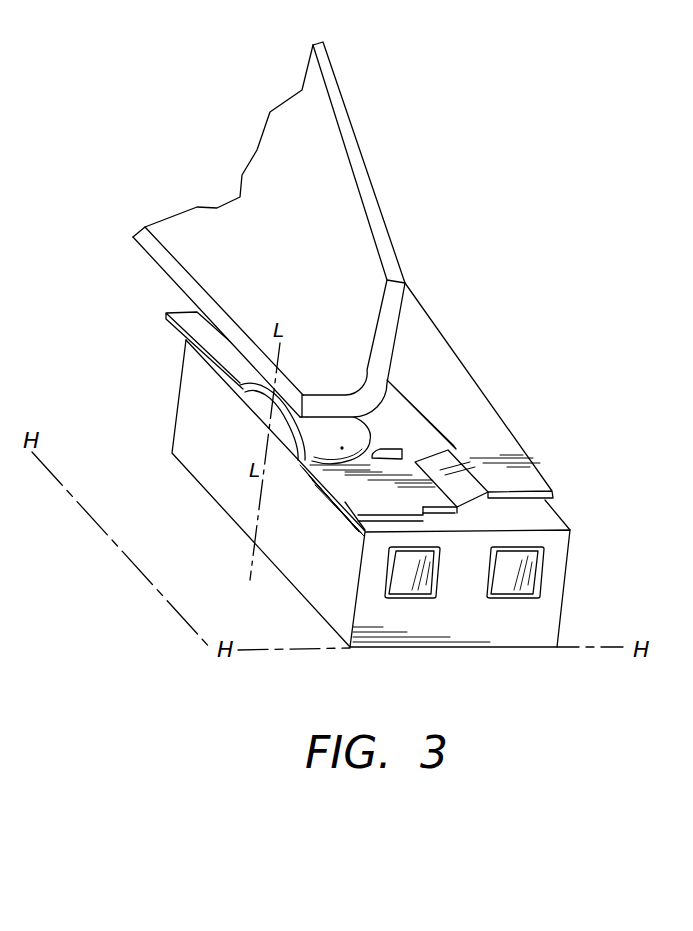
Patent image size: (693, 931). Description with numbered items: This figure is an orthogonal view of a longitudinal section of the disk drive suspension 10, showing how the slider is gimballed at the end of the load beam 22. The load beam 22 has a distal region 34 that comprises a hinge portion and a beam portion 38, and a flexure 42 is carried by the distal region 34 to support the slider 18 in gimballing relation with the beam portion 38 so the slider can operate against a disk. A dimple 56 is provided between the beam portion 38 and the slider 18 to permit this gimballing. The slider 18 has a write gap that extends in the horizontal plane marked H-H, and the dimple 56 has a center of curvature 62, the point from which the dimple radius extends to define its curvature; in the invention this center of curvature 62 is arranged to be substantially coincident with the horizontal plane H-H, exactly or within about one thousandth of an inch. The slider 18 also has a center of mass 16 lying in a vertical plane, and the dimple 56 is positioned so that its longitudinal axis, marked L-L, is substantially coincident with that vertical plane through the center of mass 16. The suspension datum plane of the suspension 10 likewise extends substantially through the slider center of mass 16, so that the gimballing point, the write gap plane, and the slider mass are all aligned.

The disk drive suspension 10 is at (492, 360).
The center of mass 16 is at (277, 480).
The slider 18 is at (538, 622).
The load beam 22 is at (368, 172).
The distal region 34 is at (256, 150).
The beam portion 38 is at (289, 230).
The flexure 42 is at (512, 437).
The dimple 56 is at (245, 390).
The center of curvature 62 is at (258, 543).